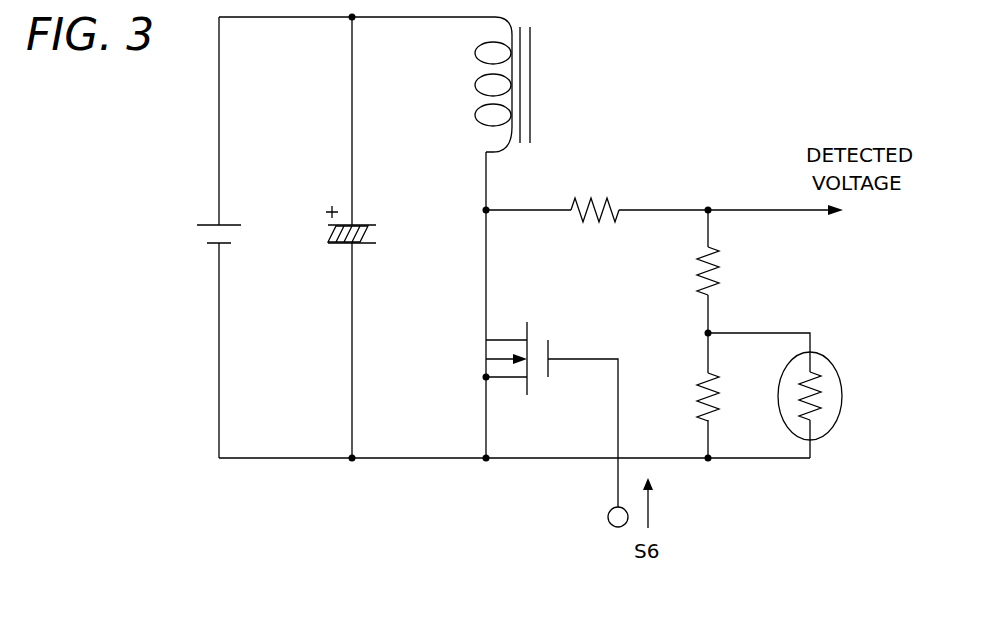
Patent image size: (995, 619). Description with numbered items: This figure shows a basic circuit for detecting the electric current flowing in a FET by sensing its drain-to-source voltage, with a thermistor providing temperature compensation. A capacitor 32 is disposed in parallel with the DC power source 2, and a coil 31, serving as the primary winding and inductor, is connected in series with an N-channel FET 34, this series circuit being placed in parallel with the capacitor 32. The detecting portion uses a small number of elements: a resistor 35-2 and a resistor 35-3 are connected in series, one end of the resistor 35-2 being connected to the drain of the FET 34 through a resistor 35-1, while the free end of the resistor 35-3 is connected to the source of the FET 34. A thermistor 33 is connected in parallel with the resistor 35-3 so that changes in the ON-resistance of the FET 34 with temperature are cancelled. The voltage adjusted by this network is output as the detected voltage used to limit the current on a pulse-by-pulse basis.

The DC power source 2 is at (205, 224).
The coil 31 is at (483, 84).
The capacitor 32 is at (365, 225).
The thermistor 33 is at (826, 396).
The N-channel FET 34 is at (528, 328).
The resistor 35-1 is at (595, 195).
The resistor 35-2 is at (734, 271).
The resistor 35-3 is at (730, 405).